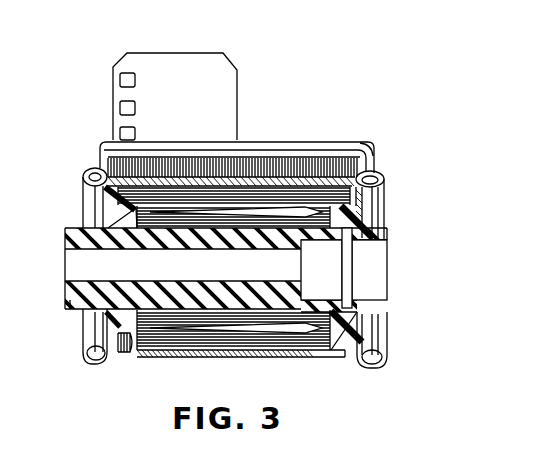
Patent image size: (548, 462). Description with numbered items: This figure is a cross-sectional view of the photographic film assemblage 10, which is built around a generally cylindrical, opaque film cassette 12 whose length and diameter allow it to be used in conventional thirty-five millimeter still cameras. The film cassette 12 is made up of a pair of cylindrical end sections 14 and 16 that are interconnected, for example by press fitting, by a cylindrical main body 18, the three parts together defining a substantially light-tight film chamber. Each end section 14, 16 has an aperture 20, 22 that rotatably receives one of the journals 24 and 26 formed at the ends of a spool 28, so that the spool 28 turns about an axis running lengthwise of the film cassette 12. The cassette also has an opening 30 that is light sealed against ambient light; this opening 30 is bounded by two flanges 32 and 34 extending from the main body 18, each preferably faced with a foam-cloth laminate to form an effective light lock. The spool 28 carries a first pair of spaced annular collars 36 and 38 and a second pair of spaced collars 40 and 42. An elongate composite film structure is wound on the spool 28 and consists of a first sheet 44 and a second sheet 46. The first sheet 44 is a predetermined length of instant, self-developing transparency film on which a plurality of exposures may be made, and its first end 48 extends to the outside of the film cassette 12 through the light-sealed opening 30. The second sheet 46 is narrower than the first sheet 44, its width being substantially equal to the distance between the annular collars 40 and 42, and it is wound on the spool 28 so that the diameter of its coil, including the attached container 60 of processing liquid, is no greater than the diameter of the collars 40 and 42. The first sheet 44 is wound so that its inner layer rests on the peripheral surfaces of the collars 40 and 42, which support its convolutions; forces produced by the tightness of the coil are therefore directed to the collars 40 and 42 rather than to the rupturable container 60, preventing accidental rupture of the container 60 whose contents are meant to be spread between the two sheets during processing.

The photographic film assemblage 10 is at (311, 118).
The film cassette 12 is at (344, 134).
The end section 14 is at (101, 205).
The end section 16 is at (386, 211).
The main body 18 is at (310, 357).
The aperture 20 is at (83, 330).
The aperture 22 is at (386, 328).
The journal 24 is at (72, 300).
The journal 26 is at (388, 232).
The spool 28 is at (176, 248).
The opening 30 is at (358, 140).
The flange 32 is at (262, 141).
The flange 34 is at (354, 152).
The annular collar 36 is at (84, 184).
The annular collar 38 is at (356, 198).
The annular collar 40 is at (130, 353).
The annular collar 42 is at (347, 326).
The first sheet 44 is at (132, 209).
The second sheet 46 is at (66, 241).
The first end 48 is at (233, 80).
The container of processing liquid 60 is at (232, 240).